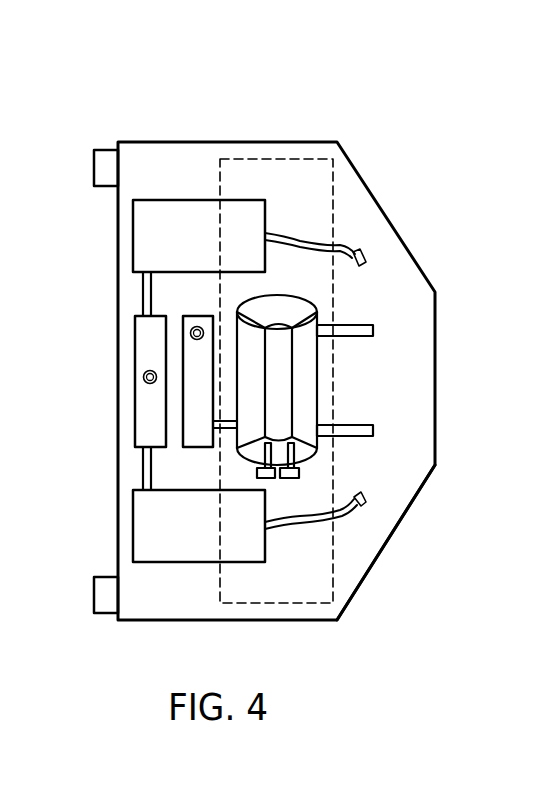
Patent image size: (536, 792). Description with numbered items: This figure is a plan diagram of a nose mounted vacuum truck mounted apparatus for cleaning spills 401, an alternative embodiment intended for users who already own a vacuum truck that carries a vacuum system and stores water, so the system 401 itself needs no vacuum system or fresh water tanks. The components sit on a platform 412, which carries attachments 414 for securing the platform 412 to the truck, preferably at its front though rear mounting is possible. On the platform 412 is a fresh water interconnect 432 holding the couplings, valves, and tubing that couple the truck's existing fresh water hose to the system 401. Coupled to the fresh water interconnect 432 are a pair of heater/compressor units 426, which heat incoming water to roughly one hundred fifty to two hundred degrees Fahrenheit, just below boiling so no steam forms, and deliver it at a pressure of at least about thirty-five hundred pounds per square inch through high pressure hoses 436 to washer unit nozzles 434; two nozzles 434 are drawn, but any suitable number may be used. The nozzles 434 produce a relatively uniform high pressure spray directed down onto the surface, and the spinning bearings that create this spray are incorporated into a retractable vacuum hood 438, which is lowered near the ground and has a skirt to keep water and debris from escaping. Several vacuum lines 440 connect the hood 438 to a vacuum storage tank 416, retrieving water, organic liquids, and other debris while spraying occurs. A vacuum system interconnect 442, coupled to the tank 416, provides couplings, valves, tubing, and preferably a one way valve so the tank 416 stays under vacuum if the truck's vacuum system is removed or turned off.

The vacuum truck mounted apparatus for cleaning spills 401 is at (184, 72).
The platform 412 is at (262, 141).
The attachments 414 is at (103, 149).
The vacuum storage tank 416 is at (281, 296).
The heater/compressor units 426 is at (157, 245).
The fresh water interconnect 432 is at (135, 415).
The washer unit nozzles 434 is at (365, 268).
The high pressure hoses 436 is at (292, 233).
The retractable vacuum hood 438 is at (405, 523).
The vacuum lines 440 is at (352, 337).
The vacuum system interconnect 442 is at (182, 362).